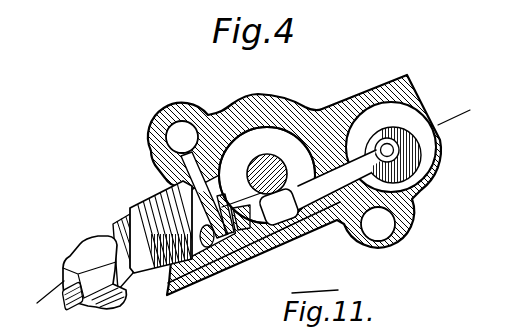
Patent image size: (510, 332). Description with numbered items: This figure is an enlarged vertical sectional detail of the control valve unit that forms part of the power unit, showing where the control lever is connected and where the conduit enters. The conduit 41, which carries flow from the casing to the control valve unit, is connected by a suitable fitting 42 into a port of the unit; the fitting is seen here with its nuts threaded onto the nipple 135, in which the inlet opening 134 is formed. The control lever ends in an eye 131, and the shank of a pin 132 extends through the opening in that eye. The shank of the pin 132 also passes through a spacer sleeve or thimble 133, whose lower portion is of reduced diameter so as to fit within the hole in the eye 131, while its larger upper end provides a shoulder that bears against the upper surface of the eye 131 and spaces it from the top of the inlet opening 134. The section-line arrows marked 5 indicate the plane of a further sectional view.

The section line 5- 5 is at (57, 283).
The conduit 41 is at (69, 270).
The fitting 42 is at (153, 285).
The eye 131 is at (252, 266).
The pin 132 is at (250, 263).
The spacer sleeve or thimble 133 is at (235, 176).
The inlet opening 134 is at (182, 178).
The nipple 135 is at (137, 207).